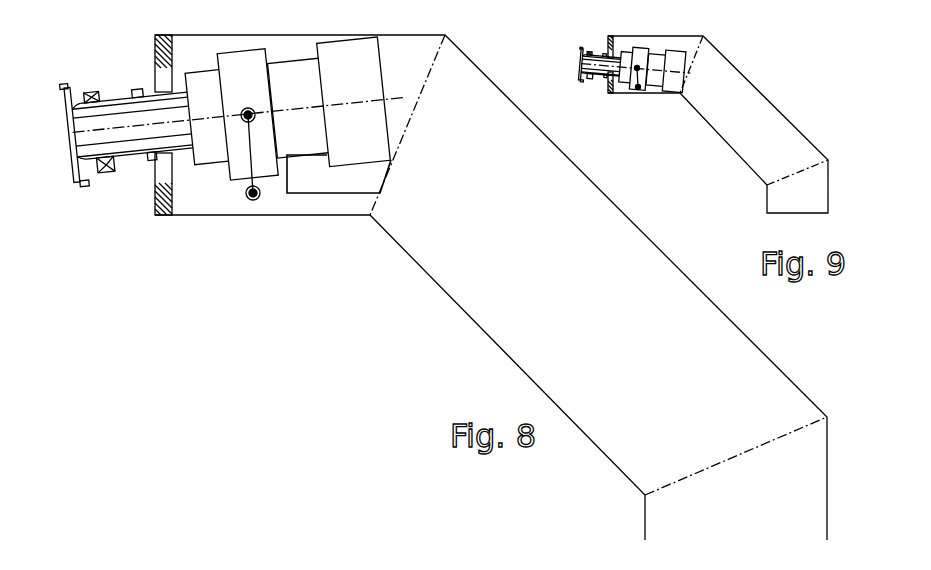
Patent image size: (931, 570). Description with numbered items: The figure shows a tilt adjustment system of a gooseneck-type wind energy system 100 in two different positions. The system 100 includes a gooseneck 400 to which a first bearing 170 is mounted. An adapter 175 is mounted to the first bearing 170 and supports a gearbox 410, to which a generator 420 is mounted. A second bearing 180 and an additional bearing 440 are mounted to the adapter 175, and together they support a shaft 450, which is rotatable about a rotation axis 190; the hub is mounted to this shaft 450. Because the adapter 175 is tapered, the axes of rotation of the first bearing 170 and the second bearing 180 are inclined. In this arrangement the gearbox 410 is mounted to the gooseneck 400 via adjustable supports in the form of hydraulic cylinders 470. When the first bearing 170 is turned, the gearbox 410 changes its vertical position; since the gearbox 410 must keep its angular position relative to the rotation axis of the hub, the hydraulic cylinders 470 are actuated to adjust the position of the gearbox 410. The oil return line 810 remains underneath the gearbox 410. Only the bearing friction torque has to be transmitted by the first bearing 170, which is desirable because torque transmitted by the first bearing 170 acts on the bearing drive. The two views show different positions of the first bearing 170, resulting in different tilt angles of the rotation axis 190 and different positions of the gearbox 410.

In FIG. 8, the gooseneck-type wind energy system 100 is at (405, 334).
In FIG. 8, the first bearing 170 is at (160, 216).
In FIG. 9, the first bearing 170 is at (610, 93).
In FIG. 8, the adapter 175 is at (138, 90).
In FIG. 8, the second bearing 180 is at (102, 173).
In FIG. 8, the rotation axis 190 is at (67, 137).
In FIG. 9, the rotation axis 190 is at (583, 66).
In FIG. 8, the gooseneck 400 is at (512, 360).
In FIG. 9, the gooseneck 400 is at (767, 195).
In FIG. 8, the gearbox 410 is at (300, 157).
In FIG. 9, the gearbox 410 is at (652, 89).
In FIG. 8, the generator 420 is at (370, 165).
In FIG. 8, the additional bearing 440 is at (155, 200).
In FIG. 8, the shaft 450 is at (80, 184).
In FIG. 8, the hydraulic cylinders 470 is at (251, 200).
In FIG. 9, the hydraulic cylinders 470 is at (638, 89).
In FIG. 8, the oil return line 810 is at (322, 200).